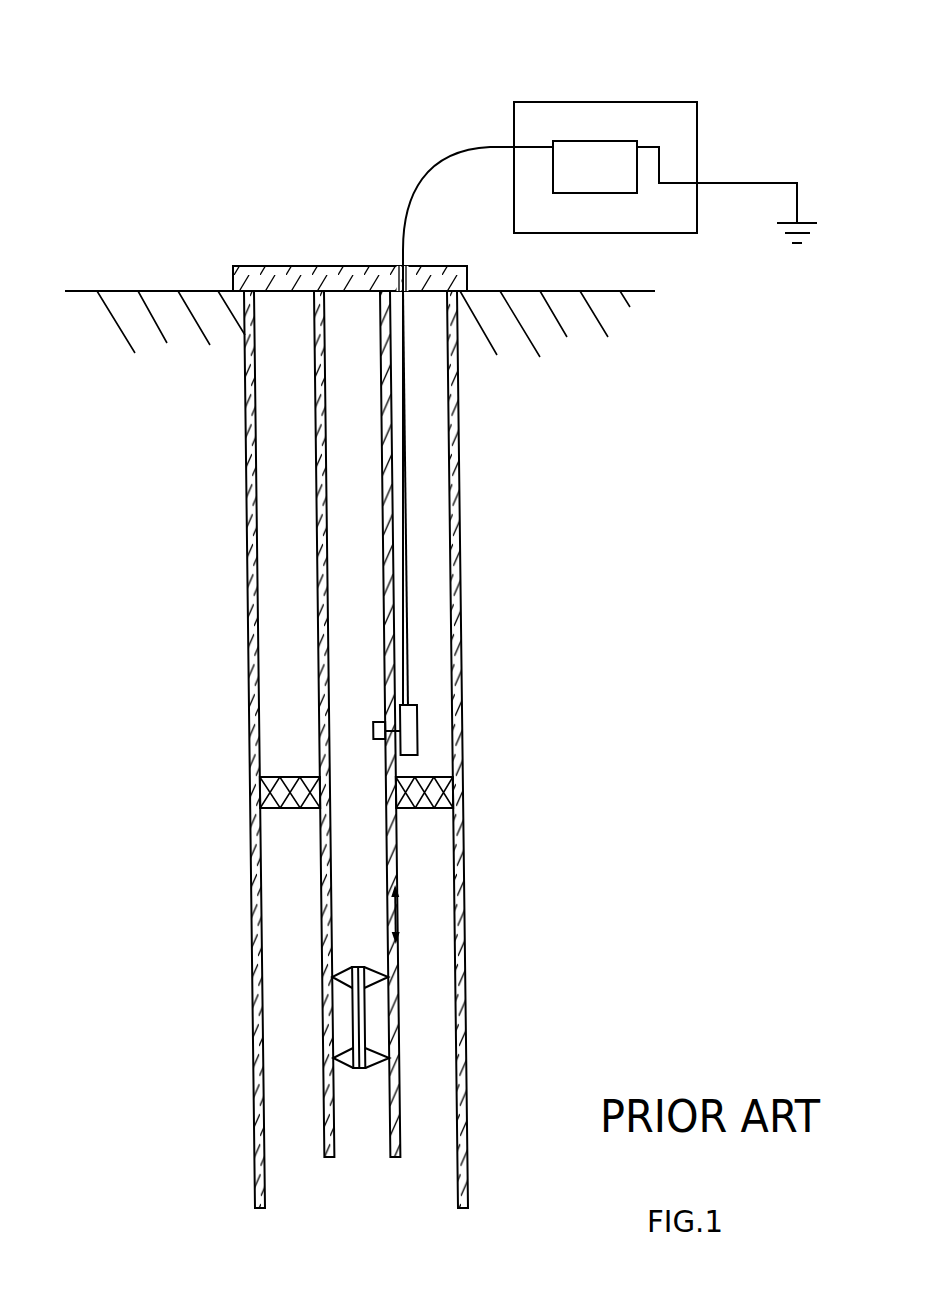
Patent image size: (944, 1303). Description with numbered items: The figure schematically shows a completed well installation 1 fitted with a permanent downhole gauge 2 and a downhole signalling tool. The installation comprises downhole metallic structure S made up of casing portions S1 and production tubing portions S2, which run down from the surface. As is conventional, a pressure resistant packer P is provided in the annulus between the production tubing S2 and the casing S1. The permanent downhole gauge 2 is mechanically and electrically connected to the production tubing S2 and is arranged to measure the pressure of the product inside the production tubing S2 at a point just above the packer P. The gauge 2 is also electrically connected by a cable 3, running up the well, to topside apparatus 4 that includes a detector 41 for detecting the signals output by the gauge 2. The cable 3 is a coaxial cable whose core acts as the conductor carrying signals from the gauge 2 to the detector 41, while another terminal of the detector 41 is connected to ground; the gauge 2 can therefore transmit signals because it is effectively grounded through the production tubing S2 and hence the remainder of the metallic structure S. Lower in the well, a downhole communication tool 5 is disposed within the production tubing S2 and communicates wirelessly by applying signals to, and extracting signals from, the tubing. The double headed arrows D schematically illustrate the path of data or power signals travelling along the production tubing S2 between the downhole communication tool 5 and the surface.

The completed well installation 1 is at (183, 243).
The topside apparatus 4 is at (665, 140).
The detector 41 is at (592, 146).
The cable 3 is at (407, 493).
The casing portions S1 is at (252, 561).
The production tubing portions S2 is at (322, 653).
The downhole metallic structure S is at (294, 749).
The permanent downhole gauge 2 is at (410, 728).
The pressure resistant packer P is at (280, 793).
The double headed arrows D is at (397, 919).
The downhole communication tool 5 is at (360, 1008).